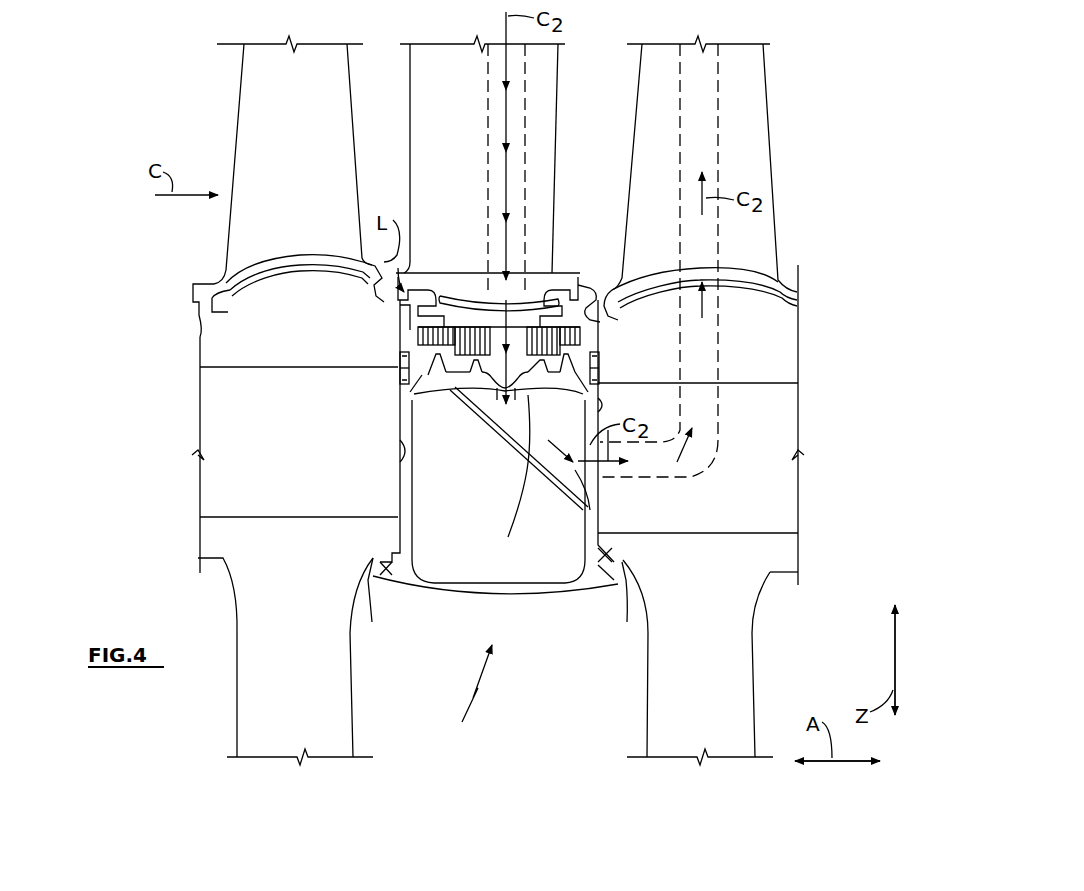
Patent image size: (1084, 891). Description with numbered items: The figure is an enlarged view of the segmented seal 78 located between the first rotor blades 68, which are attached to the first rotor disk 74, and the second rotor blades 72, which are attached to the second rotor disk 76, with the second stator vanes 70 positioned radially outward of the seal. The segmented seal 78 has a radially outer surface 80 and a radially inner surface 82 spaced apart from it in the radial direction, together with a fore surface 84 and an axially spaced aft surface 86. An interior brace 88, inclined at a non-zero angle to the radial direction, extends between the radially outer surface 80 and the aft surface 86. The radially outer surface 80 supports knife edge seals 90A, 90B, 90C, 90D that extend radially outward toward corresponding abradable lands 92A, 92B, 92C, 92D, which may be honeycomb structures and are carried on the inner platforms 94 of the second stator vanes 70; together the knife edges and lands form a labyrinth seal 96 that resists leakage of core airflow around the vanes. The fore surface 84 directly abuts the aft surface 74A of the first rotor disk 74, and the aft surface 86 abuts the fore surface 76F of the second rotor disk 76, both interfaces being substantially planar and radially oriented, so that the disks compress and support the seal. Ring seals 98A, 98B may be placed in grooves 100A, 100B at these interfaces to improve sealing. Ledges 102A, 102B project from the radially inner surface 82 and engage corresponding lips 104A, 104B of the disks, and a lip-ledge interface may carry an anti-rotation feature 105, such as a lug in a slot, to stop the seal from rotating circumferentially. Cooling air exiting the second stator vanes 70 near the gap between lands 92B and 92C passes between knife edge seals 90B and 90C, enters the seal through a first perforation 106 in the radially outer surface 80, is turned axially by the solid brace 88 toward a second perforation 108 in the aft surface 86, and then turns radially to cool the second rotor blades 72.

The first rotor blades 68 is at (270, 137).
The second stator vanes 70 is at (540, 112).
The second rotor blades 72 is at (742, 124).
The first rotor disk 74 is at (320, 707).
The aft surface of the first rotor disk 74A is at (404, 452).
The second rotor disk 76 is at (680, 696).
The fore surface of the second rotor disk 76F is at (600, 405).
The segmented seal 78 is at (463, 689).
The radially outer surface 80 is at (455, 392).
The radially inner surface 82 is at (481, 592).
The fore surface 84 is at (402, 475).
The aft surface 86 is at (600, 522).
The interior brace 88 is at (500, 474).
The knife edge seal 90A is at (440, 375).
The knife edge seal 90B is at (496, 395).
The knife edge seal 90C is at (548, 372).
The knife edge seal 90D is at (570, 362).
The abradable land 92A is at (433, 337).
The abradable land 92B is at (468, 335).
The abradable land 92C is at (562, 300).
The abradable land 92D is at (600, 292).
The inner platforms 94 is at (543, 335).
The labyrinth seal 96 is at (420, 357).
The ring seal 98A is at (400, 380).
The ring seal 98B is at (600, 376).
The groove 100A is at (398, 368).
The groove 100B is at (600, 366).
The ledge 102A is at (388, 560).
The ledge 102B is at (612, 560).
The lip 104A is at (372, 622).
The lip 104B is at (627, 622).
The anti-rotation feature 105 is at (598, 570).
The first perforation 106 is at (545, 460).
The second perforation 108 is at (590, 510).